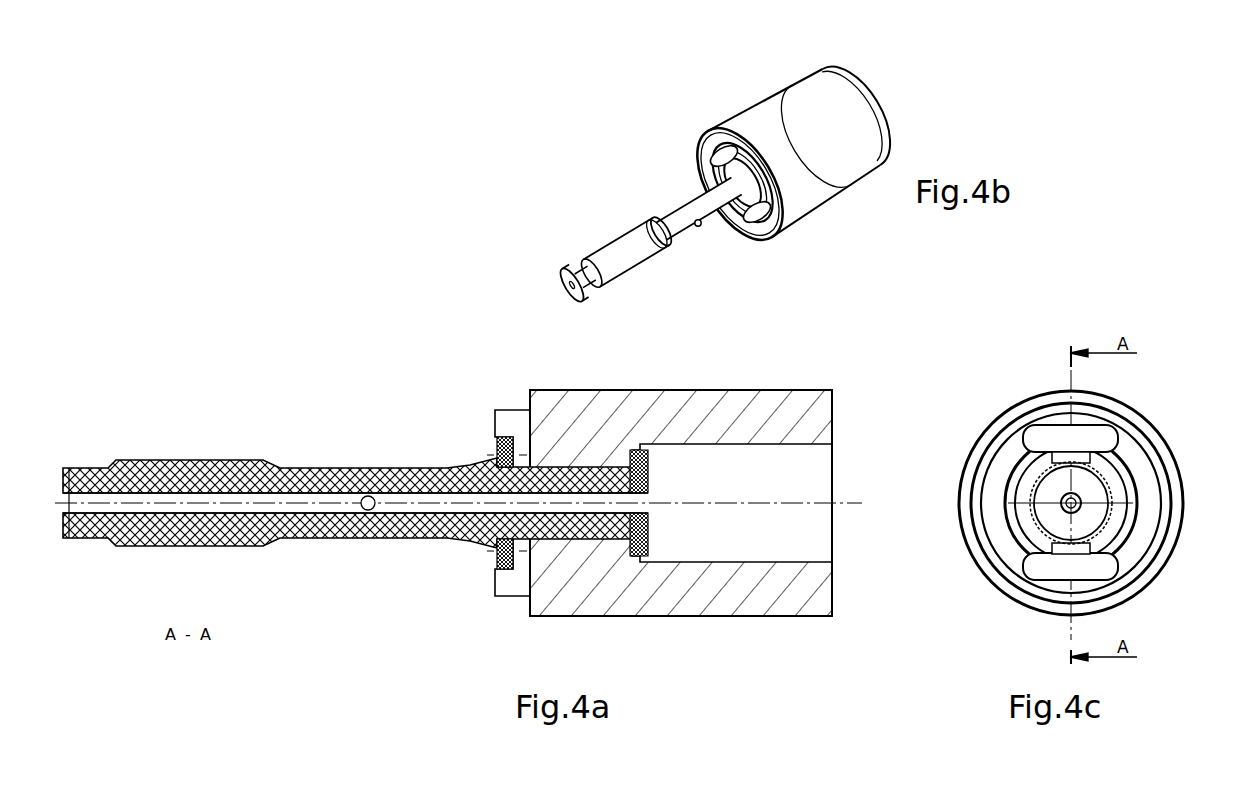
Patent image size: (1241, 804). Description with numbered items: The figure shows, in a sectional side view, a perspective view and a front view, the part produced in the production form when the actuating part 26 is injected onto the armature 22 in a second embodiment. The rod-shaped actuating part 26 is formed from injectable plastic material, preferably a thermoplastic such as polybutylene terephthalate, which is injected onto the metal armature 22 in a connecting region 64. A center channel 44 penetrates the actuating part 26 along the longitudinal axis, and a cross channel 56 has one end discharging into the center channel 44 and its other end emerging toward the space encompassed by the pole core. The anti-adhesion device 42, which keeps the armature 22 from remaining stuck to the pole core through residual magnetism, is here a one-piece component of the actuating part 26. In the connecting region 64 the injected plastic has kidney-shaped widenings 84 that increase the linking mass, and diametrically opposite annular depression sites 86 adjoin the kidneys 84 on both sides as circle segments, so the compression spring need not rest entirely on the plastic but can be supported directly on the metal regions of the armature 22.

In FIG. 4a, the armature 22 is at (725, 592).
In FIG. 4b, the armature 22 is at (817, 130).
In FIG. 4c, the armature 22 is at (1162, 553).
In FIG. 4a, the actuating part 26 is at (155, 463).
In FIG. 4b, the actuating part 26 is at (670, 213).
In FIG. 4c, the actuating part 26 is at (1033, 527).
In FIG. 4a, the anti-adhesion device 42 is at (498, 593).
In FIG. 4a, the center channel 44 is at (300, 500).
In FIG. 4c, the center channel 44 is at (1125, 504).
In FIG. 4a, the cross channel 56 is at (366, 511).
In FIG. 4b, the cross channel 56 is at (703, 230).
In FIG. 4a, the connecting region 64 is at (513, 440).
In FIG. 4b, the kidney-shaped widenings 84 is at (723, 160).
In FIG. 4c, the kidney-shaped widenings 84 is at (1090, 438).
In FIG. 4b, the annular depression sites 86 is at (703, 150).
In FIG. 4c, the annular depression sites 86 is at (1012, 482).